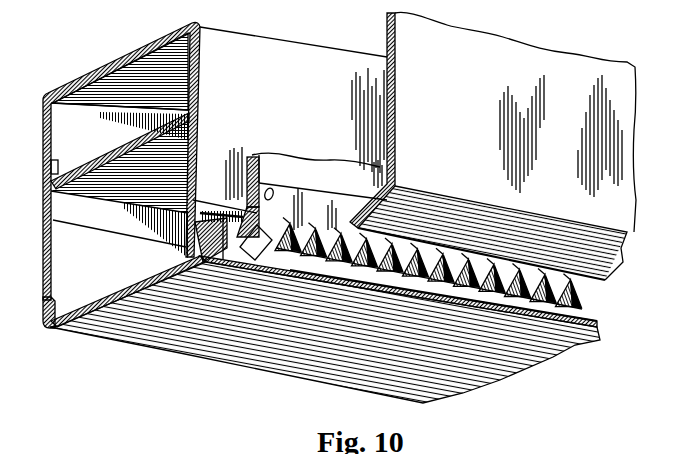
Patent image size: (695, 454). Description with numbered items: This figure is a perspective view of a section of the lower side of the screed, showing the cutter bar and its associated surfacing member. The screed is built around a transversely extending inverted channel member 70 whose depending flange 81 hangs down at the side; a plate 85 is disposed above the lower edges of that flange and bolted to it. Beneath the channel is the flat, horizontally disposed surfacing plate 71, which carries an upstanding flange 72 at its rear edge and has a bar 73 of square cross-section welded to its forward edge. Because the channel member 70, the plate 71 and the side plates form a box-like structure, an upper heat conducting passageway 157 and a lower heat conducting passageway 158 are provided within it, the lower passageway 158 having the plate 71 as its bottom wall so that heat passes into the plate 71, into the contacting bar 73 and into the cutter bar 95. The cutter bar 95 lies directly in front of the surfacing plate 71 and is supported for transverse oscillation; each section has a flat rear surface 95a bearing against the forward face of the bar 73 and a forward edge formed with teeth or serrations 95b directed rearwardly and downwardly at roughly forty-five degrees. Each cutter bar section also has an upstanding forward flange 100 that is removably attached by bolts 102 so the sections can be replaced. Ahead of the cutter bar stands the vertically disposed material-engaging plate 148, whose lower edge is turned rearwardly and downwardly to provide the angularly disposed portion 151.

The inverted channel member 70 is at (97, 72).
The upper heat conducting passageway 157 is at (63, 122).
The plate 85 is at (100, 168).
The depending flange 81 is at (43, 165).
The lower heat conducting passageway 158 is at (63, 205).
The upstanding flange 72 is at (43, 308).
The surfacing plate 71 is at (112, 297).
The bar 73 is at (205, 210).
The upstanding forward flange 100 is at (250, 158).
The removable bolts 102 is at (271, 190).
The material-engaging plate 148 is at (388, 50).
The angularly disposed portion 151 is at (390, 200).
The cutter bar 95 is at (314, 210).
The flat rear surface 95a is at (246, 210).
The teeth or serrations 95b is at (337, 240).